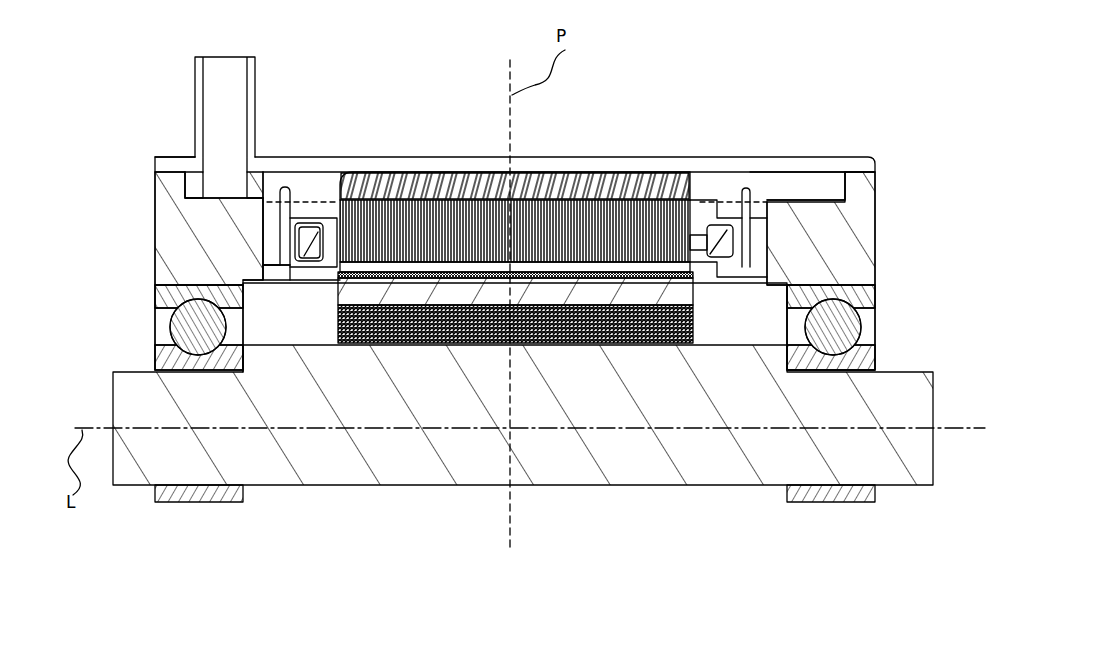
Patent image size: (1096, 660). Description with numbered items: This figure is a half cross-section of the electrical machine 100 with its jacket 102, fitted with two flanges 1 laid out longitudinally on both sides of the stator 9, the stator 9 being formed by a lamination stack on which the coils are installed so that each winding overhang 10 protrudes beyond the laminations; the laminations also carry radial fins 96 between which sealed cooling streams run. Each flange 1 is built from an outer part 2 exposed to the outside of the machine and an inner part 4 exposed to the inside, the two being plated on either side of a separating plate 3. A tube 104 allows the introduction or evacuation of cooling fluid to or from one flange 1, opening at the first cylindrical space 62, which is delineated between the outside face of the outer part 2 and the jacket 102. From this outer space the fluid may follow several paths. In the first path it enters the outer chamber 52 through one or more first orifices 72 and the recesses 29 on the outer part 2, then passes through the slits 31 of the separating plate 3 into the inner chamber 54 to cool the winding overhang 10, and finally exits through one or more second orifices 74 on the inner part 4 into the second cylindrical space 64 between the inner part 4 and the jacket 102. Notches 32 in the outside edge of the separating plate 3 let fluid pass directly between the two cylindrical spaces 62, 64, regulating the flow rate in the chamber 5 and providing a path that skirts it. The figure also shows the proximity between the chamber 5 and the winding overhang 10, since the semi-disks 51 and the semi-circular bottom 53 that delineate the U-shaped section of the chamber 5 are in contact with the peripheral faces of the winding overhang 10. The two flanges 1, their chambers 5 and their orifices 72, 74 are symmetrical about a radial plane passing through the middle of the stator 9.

The electrical machine 100 is at (164, 100).
The flange 1 is at (163, 247).
The outer part 2 is at (167, 268).
The separating plate 3 is at (321, 189).
The inner part 4 is at (745, 185).
The chamber 5 is at (763, 258).
The stator 9 is at (600, 195).
The winding overhang 10 is at (320, 238).
The recess 29 is at (268, 212).
The slit 31 is at (270, 263).
The notch 32 is at (762, 183).
The semi-disk 51 is at (722, 268).
The outer chamber 52 is at (268, 238).
The semi-circular bottom 53 is at (745, 243).
The inner chamber 54 is at (300, 275).
The first cylindrical space 62 is at (200, 185).
The second cylindrical space 64 is at (307, 235).
The first orifice 72 is at (268, 192).
The second orifice 74 is at (708, 195).
The fin 96 is at (545, 175).
The jacket 102 is at (466, 165).
The tube 104 is at (258, 128).